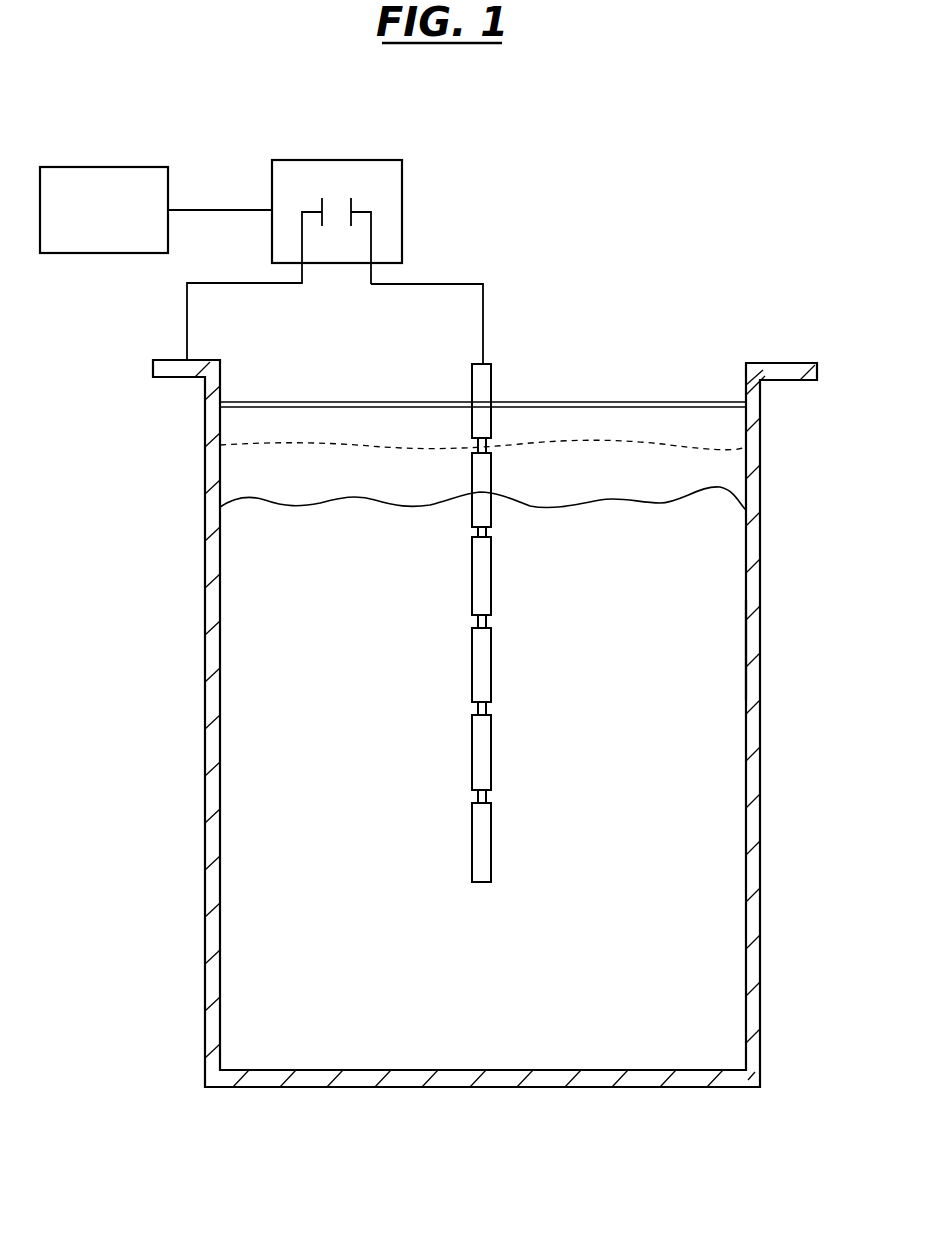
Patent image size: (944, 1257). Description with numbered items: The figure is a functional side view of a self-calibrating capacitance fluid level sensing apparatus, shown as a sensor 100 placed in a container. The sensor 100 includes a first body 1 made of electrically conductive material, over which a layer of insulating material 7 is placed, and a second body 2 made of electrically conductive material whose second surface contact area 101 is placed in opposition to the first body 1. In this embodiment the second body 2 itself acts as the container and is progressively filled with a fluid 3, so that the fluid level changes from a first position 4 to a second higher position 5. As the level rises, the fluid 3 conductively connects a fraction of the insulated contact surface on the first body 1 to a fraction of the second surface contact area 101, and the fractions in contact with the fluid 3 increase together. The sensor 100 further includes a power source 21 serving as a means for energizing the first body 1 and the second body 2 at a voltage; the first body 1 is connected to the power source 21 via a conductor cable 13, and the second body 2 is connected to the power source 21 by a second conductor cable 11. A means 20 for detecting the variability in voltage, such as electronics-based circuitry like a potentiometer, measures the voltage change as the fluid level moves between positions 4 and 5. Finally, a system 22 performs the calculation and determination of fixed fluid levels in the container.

The first body 1 is at (497, 623).
The second body 2 is at (763, 730).
The fluid 3 is at (670, 952).
The first position of fluid level 4 is at (695, 495).
The second higher position of fluid level 5 is at (670, 445).
The layer of insulating material 7 is at (472, 682).
The second conductor cable 11 is at (187, 310).
The conductor cable 13 is at (483, 322).
The means for detecting variability in voltage 20 is at (380, 197).
The power source 21 is at (333, 210).
The system for calculation and determination of fixed fluid levels 22 is at (112, 166).
The sensor 100 is at (581, 254).
The second surface contact area 101 is at (746, 641).